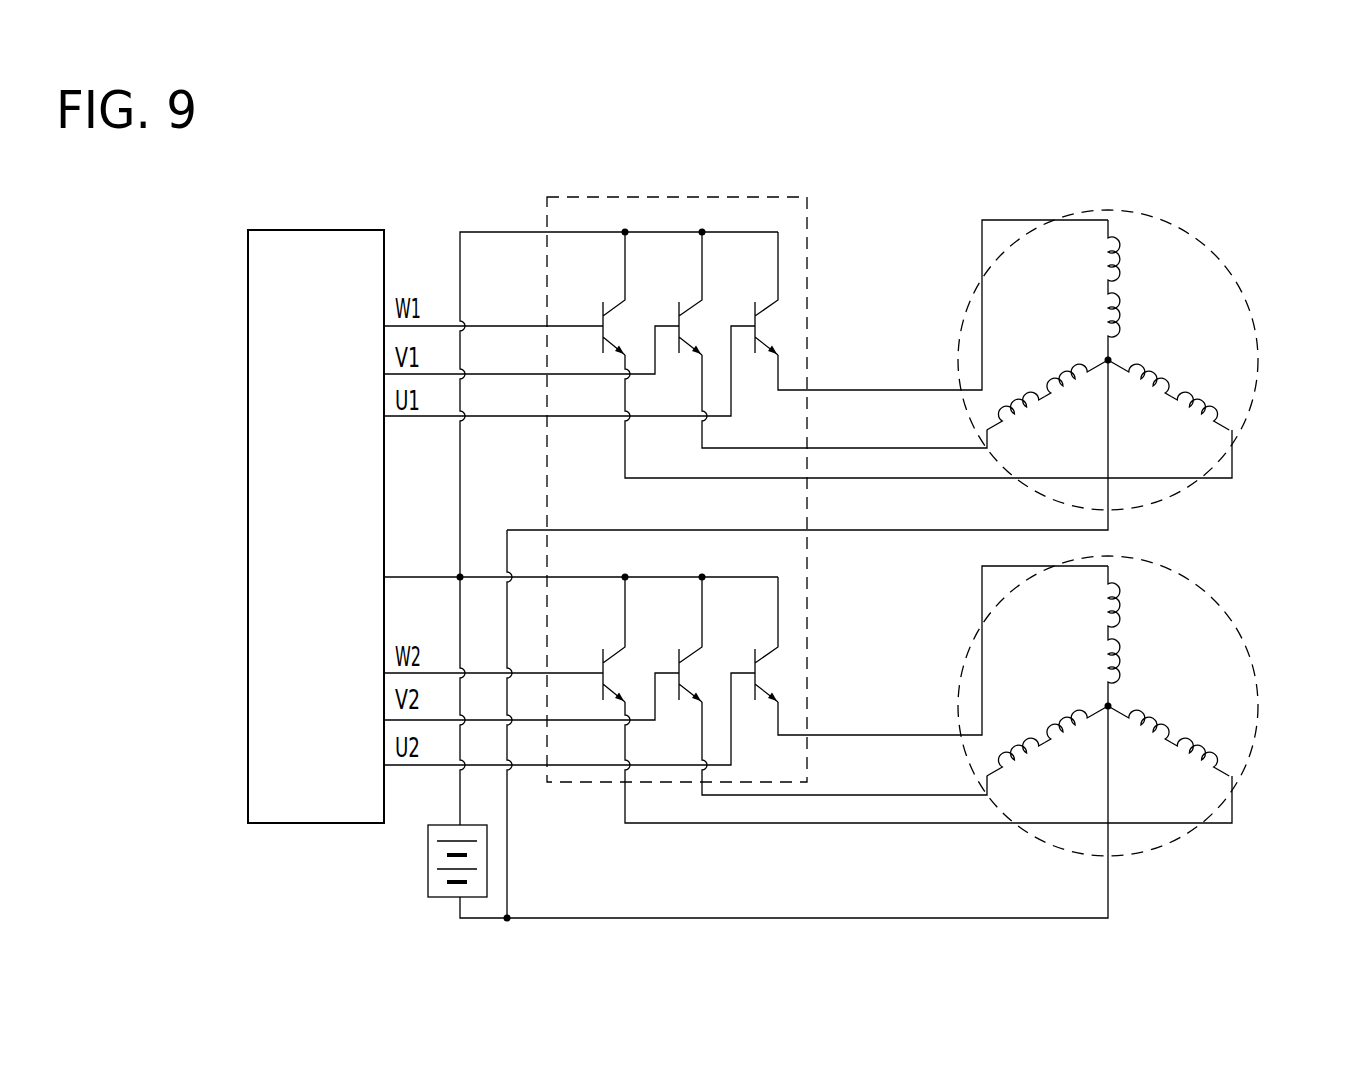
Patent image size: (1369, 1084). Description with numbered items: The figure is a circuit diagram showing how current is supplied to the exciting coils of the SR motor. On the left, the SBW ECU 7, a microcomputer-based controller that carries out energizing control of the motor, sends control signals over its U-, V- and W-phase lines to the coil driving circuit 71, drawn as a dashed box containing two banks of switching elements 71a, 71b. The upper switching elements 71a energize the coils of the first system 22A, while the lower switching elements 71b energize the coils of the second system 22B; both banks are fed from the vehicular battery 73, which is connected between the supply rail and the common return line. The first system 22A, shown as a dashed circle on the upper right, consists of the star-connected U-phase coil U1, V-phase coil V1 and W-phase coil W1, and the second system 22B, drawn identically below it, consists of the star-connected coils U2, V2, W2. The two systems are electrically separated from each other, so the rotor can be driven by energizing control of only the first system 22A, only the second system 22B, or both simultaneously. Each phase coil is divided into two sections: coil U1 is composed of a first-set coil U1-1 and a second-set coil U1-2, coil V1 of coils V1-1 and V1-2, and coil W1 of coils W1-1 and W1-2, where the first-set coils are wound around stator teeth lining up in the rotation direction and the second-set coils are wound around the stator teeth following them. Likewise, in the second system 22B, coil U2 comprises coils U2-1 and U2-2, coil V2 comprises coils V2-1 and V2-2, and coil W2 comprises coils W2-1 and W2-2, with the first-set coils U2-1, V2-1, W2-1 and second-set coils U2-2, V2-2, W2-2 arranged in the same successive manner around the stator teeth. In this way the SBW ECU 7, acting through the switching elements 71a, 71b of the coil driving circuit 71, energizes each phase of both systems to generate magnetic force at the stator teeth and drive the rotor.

The SBW ECU 7 is at (288, 823).
The coil driving circuit 71 is at (809, 226).
The switching element 71a is at (753, 306).
The switching element 71b is at (753, 652).
The vehicular battery 73 is at (428, 875).
The first system 22A is at (1154, 360).
The second system 22B is at (1154, 706).
The U-phase coil of the first system U1 is at (1087, 290).
The first-set U-phase coil of the first system U1-1 is at (1100, 318).
The second-set U-phase coil of the first system U1-2 is at (1100, 258).
The V-phase coil of the first system V1 is at (1044, 407).
The first-set V-phase coil of the first system V1-1 is at (1078, 395).
The second-set V-phase coil of the first system V1-2 is at (1030, 416).
The W-phase coil of the first system W1 is at (1171, 406).
The first-set W-phase coil of the first system W1-1 is at (1138, 395).
The second-set W-phase coil of the first system W1-2 is at (1186, 416).
The U-phase coil of the second system U2 is at (1087, 636).
The first-set U-phase coil of the second system U2-1 is at (1100, 664).
The second-set U-phase coil of the second system U2-2 is at (1100, 604).
The V-phase coil of the second system V2 is at (1044, 753).
The first-set V-phase coil of the second system V2-1 is at (1078, 741).
The second-set V-phase coil of the second system V2-2 is at (1030, 762).
The W-phase coil of the second system W2 is at (1171, 752).
The first-set W-phase coil of the second system W2-1 is at (1138, 741).
The second-set W-phase coil of the second system W2-2 is at (1186, 762).